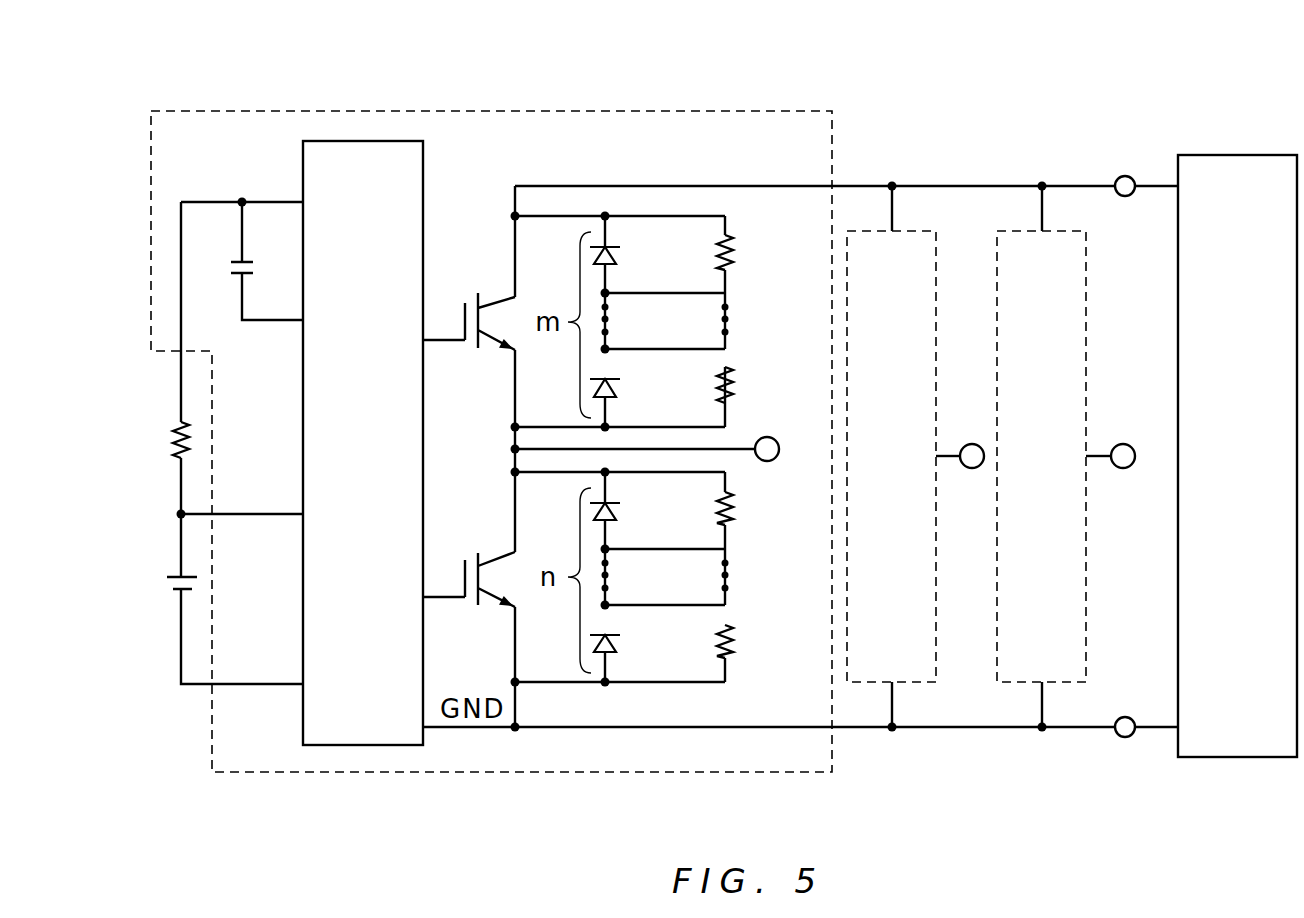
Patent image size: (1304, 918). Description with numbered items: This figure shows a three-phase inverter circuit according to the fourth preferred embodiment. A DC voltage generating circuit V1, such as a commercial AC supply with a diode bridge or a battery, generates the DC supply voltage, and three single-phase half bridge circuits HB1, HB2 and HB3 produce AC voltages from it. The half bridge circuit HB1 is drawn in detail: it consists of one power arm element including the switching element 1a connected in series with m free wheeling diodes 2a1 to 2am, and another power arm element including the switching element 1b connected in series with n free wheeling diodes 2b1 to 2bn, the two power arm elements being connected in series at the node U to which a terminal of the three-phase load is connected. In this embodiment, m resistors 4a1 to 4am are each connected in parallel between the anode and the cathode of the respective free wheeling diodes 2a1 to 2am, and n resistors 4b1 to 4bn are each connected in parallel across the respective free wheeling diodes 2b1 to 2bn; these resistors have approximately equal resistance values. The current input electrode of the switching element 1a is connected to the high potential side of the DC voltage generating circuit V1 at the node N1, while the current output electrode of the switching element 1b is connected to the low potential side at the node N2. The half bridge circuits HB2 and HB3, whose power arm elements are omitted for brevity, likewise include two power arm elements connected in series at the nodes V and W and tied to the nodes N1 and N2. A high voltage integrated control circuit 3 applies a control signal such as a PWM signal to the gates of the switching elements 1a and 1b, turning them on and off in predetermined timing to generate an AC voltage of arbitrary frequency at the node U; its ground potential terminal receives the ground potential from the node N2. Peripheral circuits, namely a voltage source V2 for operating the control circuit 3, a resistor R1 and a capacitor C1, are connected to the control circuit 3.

The half bridge circuit HB1 is at (492, 111).
The HVIC 3 is at (363, 141).
The switching element 1a is at (475, 292).
The switching element 1b is at (475, 549).
The free wheeling diode 2a1 is at (618, 257).
The free wheeling diode 2am is at (618, 389).
The free wheeling diode 2b1 is at (618, 513).
The free wheeling diode 2bn is at (618, 645).
The resistor 4a1 is at (739, 257).
The resistor 4am is at (739, 389).
The resistor 4b1 is at (739, 513).
The resistor 4bn is at (739, 645).
The capacitor C1 is at (267, 261).
The resistor R1 is at (159, 440).
The voltage source V2 is at (160, 588).
The node U is at (662, 449).
The node V is at (960, 441).
The node W is at (1111, 441).
The half bridge circuit HB2 is at (905, 231).
The half bridge circuit HB3 is at (1052, 231).
The node N1 is at (1125, 170).
The node N2 is at (1125, 745).
The DC voltage generating circuit V1 is at (1235, 155).